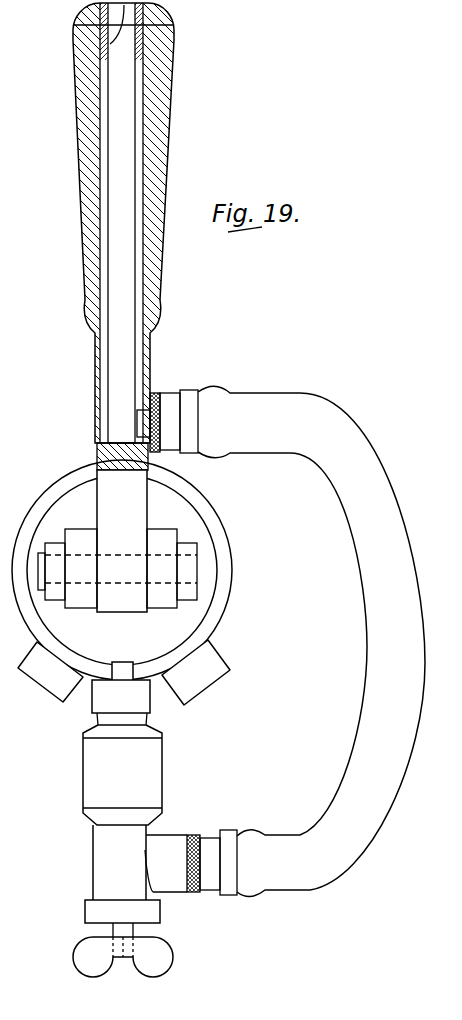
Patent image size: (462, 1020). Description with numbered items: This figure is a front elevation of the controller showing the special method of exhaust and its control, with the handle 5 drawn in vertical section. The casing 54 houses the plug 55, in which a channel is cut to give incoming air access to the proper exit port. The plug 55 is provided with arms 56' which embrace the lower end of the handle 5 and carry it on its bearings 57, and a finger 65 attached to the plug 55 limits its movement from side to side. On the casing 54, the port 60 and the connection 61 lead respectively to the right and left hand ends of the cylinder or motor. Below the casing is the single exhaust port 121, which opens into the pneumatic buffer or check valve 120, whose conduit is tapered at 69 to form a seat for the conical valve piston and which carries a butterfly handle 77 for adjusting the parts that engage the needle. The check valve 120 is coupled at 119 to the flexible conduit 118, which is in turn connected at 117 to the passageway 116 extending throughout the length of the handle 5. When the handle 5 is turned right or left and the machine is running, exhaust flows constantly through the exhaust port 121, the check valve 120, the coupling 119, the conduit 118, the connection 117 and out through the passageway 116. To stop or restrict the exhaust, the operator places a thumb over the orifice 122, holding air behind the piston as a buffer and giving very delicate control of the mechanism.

The handle 5 is at (160, 130).
The orifice 122 is at (103, 40).
The passageway 116 is at (116, 241).
The connection 117 is at (172, 398).
The flexible conduit 118 is at (258, 398).
The coupling 119 is at (198, 843).
The casing 54 is at (216, 522).
The plug 55 is at (78, 498).
The bearings 57 is at (122, 553).
The arms 56' is at (121, 582).
The port 60 is at (214, 668).
The connection 61 is at (53, 685).
The finger 65 is at (124, 668).
The exhaust port 121 is at (145, 707).
The pneumatic buffer or check valve 120 is at (150, 790).
The tapered seat 69 is at (83, 777).
The butterfly handle 77 is at (78, 950).